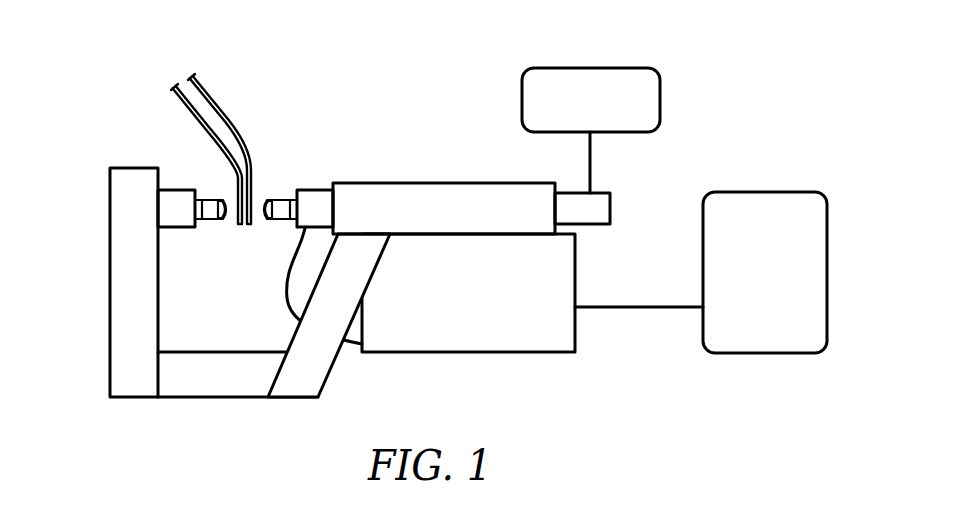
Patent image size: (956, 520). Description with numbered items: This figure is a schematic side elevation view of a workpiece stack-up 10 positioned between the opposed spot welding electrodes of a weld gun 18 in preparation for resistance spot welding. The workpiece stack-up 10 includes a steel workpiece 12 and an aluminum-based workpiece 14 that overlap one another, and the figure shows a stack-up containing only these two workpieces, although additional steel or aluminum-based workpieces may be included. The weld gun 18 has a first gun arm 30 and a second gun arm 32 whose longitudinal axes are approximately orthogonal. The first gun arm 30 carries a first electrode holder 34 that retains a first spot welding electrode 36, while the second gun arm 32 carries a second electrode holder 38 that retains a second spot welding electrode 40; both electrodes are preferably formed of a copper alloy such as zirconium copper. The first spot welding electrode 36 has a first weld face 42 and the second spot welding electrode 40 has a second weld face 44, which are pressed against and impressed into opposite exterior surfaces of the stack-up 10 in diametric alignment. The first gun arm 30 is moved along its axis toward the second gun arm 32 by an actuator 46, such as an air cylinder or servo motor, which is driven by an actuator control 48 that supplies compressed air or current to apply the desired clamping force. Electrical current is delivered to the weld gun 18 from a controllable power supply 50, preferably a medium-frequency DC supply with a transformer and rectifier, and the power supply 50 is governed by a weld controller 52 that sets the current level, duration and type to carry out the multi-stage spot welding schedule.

The workpiece stack-up 10 is at (278, 83).
The steel workpiece 12 is at (221, 96).
The aluminum-based workpiece 14 is at (200, 100).
The weld gun 18 is at (405, 128).
The first gun arm 30 is at (445, 192).
The second gun arm 32 is at (120, 233).
The first electrode holder 34 is at (289, 204).
The first spot welding electrode 36 is at (263, 194).
The second electrode holder 38 is at (200, 205).
The second spot welding electrode 40 is at (218, 222).
The first weld face 42 is at (256, 212).
The second weld face 44 is at (232, 210).
The actuator 46 is at (598, 209).
The actuator control 48 is at (593, 78).
The power supply 50 is at (513, 338).
The weld controller 52 is at (770, 332).